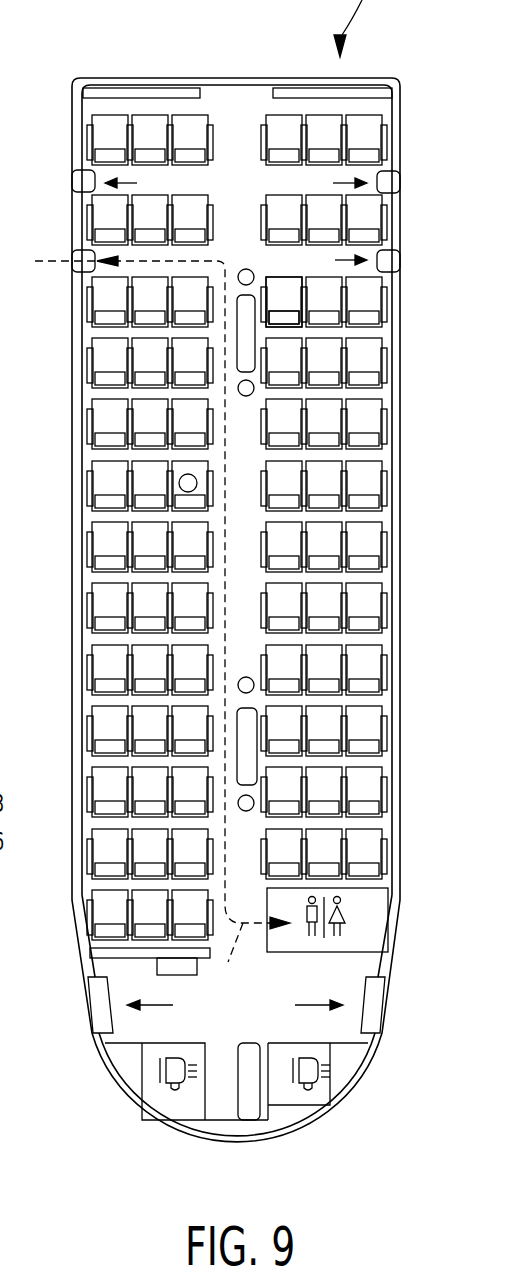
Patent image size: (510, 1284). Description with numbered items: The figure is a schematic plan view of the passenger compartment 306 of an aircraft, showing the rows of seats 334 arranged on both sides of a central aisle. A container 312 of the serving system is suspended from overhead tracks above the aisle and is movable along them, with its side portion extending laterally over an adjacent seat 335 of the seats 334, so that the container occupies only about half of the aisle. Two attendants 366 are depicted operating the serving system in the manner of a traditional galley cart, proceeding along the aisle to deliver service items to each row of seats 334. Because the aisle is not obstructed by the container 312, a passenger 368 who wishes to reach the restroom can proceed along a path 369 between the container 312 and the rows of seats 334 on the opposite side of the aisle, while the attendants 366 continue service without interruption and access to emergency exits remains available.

The passenger compartment 306 is at (236, 95).
The container 312 is at (248, 355).
The seats 334 is at (370, 297).
The adjacent seat 335 is at (287, 296).
The attendants 366 is at (243, 269).
The passenger 368 is at (218, 483).
The path 369 is at (162, 628).